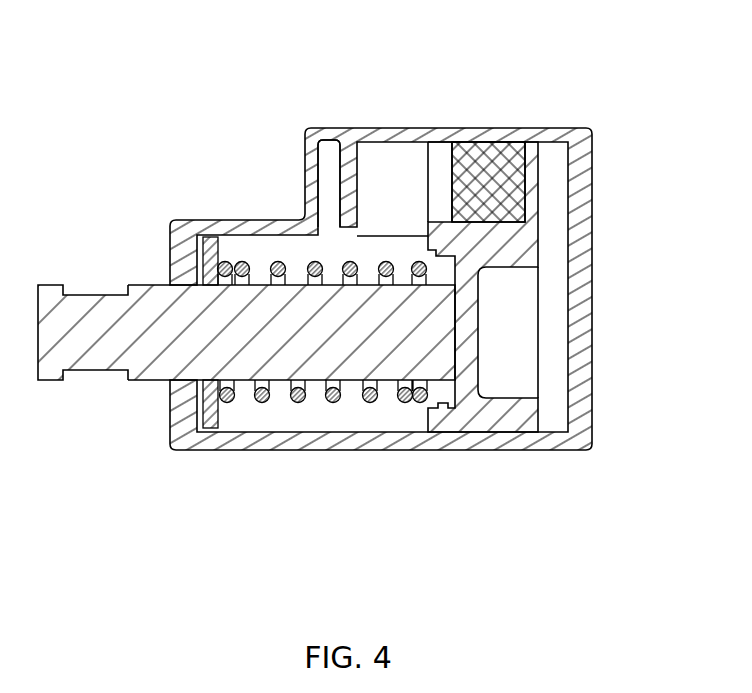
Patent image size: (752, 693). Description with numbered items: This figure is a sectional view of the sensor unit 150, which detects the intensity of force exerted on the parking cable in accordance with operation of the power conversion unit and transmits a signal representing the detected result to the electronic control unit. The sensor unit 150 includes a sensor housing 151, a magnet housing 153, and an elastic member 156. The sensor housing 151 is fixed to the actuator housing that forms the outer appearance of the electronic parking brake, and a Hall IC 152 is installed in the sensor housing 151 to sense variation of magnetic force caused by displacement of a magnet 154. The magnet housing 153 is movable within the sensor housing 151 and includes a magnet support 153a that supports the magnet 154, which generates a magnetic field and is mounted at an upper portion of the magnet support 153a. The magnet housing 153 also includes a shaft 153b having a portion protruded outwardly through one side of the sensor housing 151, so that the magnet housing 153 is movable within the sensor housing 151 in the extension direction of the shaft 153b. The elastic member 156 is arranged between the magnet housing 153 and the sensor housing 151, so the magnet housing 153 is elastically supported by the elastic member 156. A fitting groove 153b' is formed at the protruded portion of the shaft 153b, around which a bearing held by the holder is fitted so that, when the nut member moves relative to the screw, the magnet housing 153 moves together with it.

The sensor unit 150 is at (347, 281).
The sensor housing 151 is at (580, 204).
The Hall IC 152 is at (334, 153).
The magnet housing 153 is at (288, 350).
The magnet support 153a is at (469, 420).
The shaft 153b is at (246, 398).
The fitting groove 153b' is at (83, 380).
The magnet 154 is at (490, 150).
The elastic member 156 is at (328, 401).